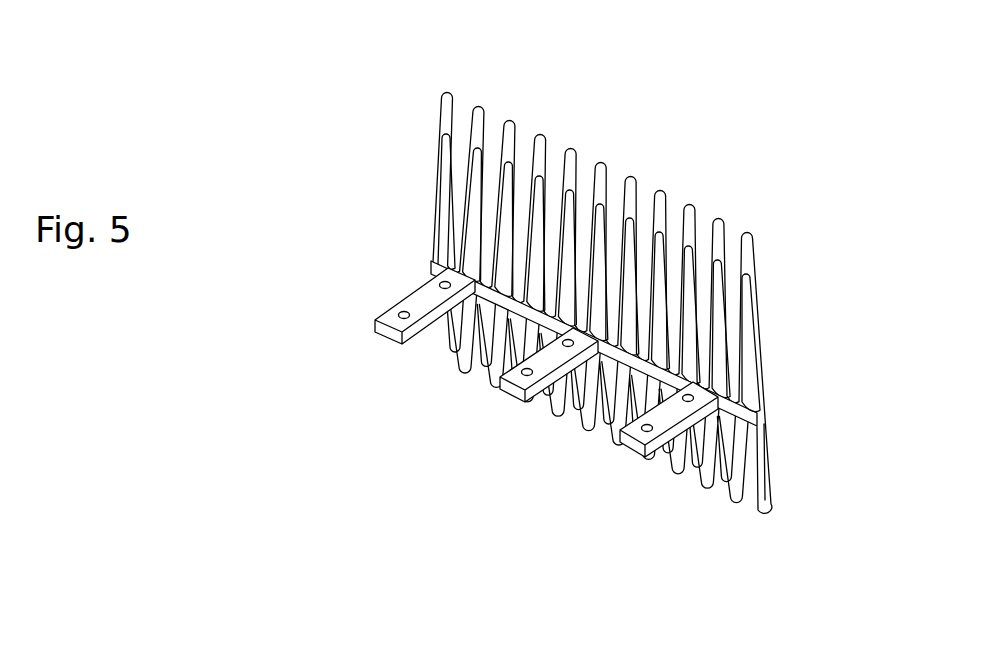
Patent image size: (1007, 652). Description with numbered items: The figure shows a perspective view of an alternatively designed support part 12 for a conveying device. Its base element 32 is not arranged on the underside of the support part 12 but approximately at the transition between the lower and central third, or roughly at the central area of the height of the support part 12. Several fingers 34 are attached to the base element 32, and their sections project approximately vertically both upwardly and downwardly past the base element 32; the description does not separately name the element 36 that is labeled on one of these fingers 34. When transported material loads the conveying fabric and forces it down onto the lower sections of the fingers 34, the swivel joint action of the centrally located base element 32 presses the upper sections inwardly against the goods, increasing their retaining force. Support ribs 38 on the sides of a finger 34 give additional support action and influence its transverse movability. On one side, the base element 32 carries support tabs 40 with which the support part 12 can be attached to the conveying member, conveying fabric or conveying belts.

The support part 12 is at (616, 320).
The base element 32 is at (752, 413).
The finger 34 is at (750, 257).
The fins 36 is at (556, 172).
The support rib 38 is at (440, 232).
The support tab 40 is at (657, 437).